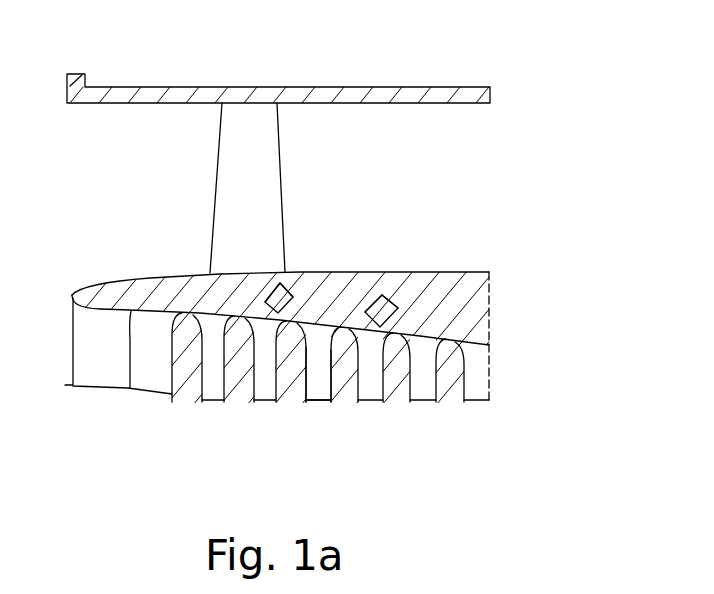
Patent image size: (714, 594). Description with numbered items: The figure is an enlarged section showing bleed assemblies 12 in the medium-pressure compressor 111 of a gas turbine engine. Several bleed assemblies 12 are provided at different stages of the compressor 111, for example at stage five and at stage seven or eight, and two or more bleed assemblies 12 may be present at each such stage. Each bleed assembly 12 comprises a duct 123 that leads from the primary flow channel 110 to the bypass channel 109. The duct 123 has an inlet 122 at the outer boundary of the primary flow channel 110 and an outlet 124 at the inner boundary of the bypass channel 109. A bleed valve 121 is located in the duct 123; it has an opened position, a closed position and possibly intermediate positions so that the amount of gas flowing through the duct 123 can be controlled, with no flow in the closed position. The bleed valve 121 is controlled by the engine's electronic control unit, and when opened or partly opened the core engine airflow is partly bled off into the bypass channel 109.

The bypass channel 109 is at (428, 130).
The bleed assembly 12 is at (256, 295).
The outlet 124 is at (290, 283).
The duct 123 is at (287, 292).
The inlet 122 is at (262, 314).
The bleed valve 121 is at (372, 304).
The primary flow channel 110 is at (478, 372).
The compressor 111 is at (193, 406).